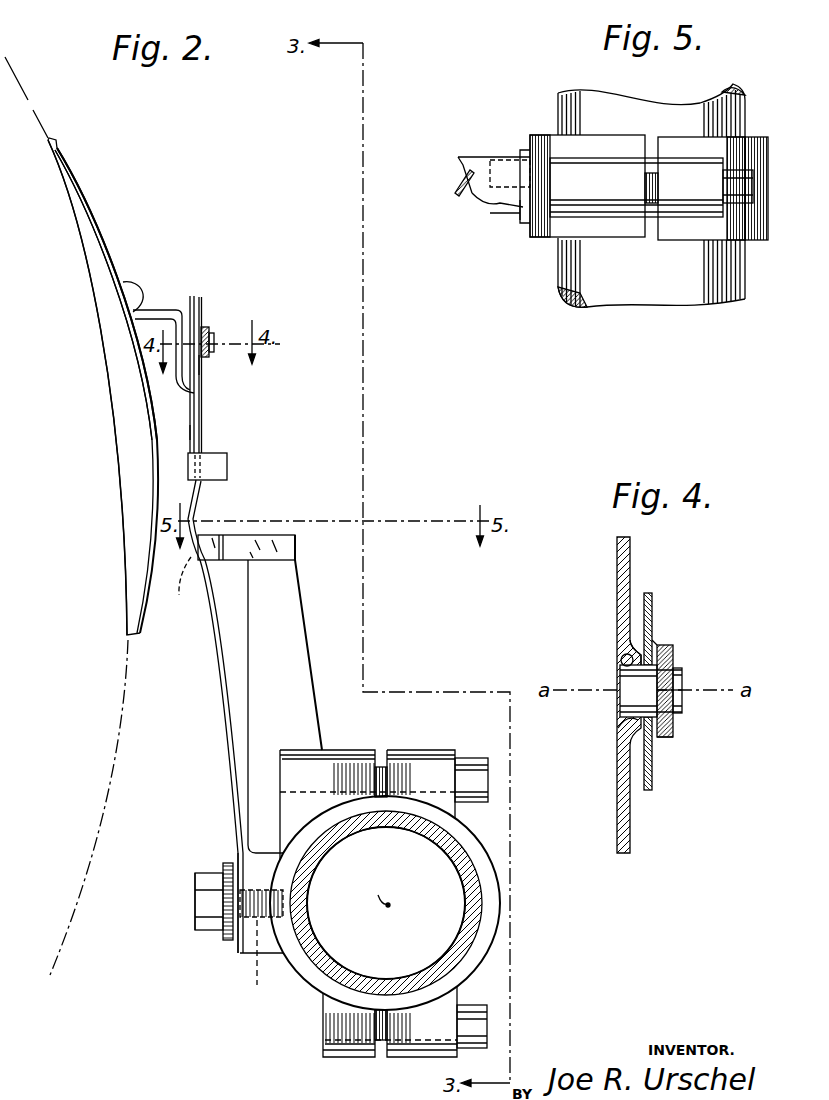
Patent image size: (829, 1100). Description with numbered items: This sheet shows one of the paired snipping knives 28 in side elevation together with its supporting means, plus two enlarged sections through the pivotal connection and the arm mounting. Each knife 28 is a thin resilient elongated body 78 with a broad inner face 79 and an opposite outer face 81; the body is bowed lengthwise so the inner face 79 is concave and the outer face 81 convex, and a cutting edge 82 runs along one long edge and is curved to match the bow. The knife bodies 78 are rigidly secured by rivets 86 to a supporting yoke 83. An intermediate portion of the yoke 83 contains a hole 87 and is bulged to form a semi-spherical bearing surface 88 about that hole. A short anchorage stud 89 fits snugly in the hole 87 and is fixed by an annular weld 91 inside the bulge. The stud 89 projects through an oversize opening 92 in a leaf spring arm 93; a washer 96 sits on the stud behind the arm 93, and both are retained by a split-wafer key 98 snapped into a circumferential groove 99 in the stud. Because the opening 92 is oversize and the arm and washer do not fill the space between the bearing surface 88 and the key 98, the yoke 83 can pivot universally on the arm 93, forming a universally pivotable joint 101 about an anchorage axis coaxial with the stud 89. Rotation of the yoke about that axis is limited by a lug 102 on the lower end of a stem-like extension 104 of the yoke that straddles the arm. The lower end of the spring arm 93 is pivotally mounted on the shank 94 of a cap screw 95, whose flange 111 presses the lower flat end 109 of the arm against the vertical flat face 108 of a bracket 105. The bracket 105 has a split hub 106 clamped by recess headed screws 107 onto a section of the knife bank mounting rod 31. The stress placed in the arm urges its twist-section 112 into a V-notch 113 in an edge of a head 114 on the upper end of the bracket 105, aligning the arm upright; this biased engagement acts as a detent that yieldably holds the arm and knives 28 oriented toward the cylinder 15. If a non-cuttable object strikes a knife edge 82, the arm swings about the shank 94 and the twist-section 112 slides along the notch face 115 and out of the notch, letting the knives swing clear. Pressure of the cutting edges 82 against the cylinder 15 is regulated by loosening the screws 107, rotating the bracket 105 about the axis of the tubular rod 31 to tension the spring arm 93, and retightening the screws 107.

In FIG. 2, the cylinder 15 is at (123, 712).
In FIG. 2, the snipping knife 28 is at (107, 234).
In FIG. 2, the knife bank mounting rod 31 is at (482, 908).
In FIG. 5, the knife bank mounting rod 31 is at (632, 103).
In FIG. 2, the knife body 78 is at (57, 150).
In FIG. 2, the inner face 79 is at (110, 327).
In FIG. 2, the outer face 81 is at (103, 297).
In FIG. 2, the cutting edge 82 is at (118, 415).
In FIG. 2, the supporting yoke 83 is at (181, 310).
In FIG. 4, the supporting yoke 83 is at (617, 585).
In FIG. 2, the rivet 86 is at (138, 290).
In FIG. 4, the hole 87 is at (627, 727).
In FIG. 2, the semi-spherical bearing surface 88 is at (187, 362).
In FIG. 4, the semi-spherical bearing surface 88 is at (632, 648).
In FIG. 4, the anchorage stud 89 is at (630, 700).
In FIG. 4, the annular weld 91 is at (620, 660).
In FIG. 4, the opening 92 is at (661, 738).
In FIG. 2, the leaf spring arm 93 is at (202, 404).
In FIG. 4, the leaf spring arm 93 is at (652, 605).
In FIG. 2, the shank 94 is at (264, 964).
In FIG. 2, the cap screw 95 is at (203, 930).
In FIG. 2, the washer 96 is at (204, 328).
In FIG. 4, the washer 96 is at (673, 648).
In FIG. 4, the split-wafer key 98 is at (682, 657).
In FIG. 4, the circumferential groove 99 is at (668, 695).
In FIG. 2, the universally pivotable joint 101 is at (205, 360).
In FIG. 4, the universally pivotable joint 101 is at (656, 643).
In FIG. 2, the lug 102 is at (220, 458).
In FIG. 2, the stem-like extension 104 is at (191, 432).
In FIG. 2, the bracket 105 is at (302, 645).
In FIG. 2, the split hub 106 is at (395, 750).
In FIG. 5, the split hub 106 is at (667, 237).
In FIG. 2, the recess headed screw 107 is at (468, 760).
In FIG. 5, the recess headed screw 107 is at (748, 180).
In FIG. 2, the vertical flat face 108 is at (234, 950).
In FIG. 2, the lower flat end 109 is at (238, 855).
In FIG. 2, the flange 111 is at (212, 898).
In FIG. 2, the twist-section 112 is at (200, 528).
In FIG. 5, the twist-section 112 is at (456, 187).
In FIG. 2, the V-notch 113 is at (182, 588).
In FIG. 5, the V-notch 113 is at (458, 170).
In FIG. 2, the head 114 is at (231, 560).
In FIG. 5, the notch face 115 is at (475, 196).